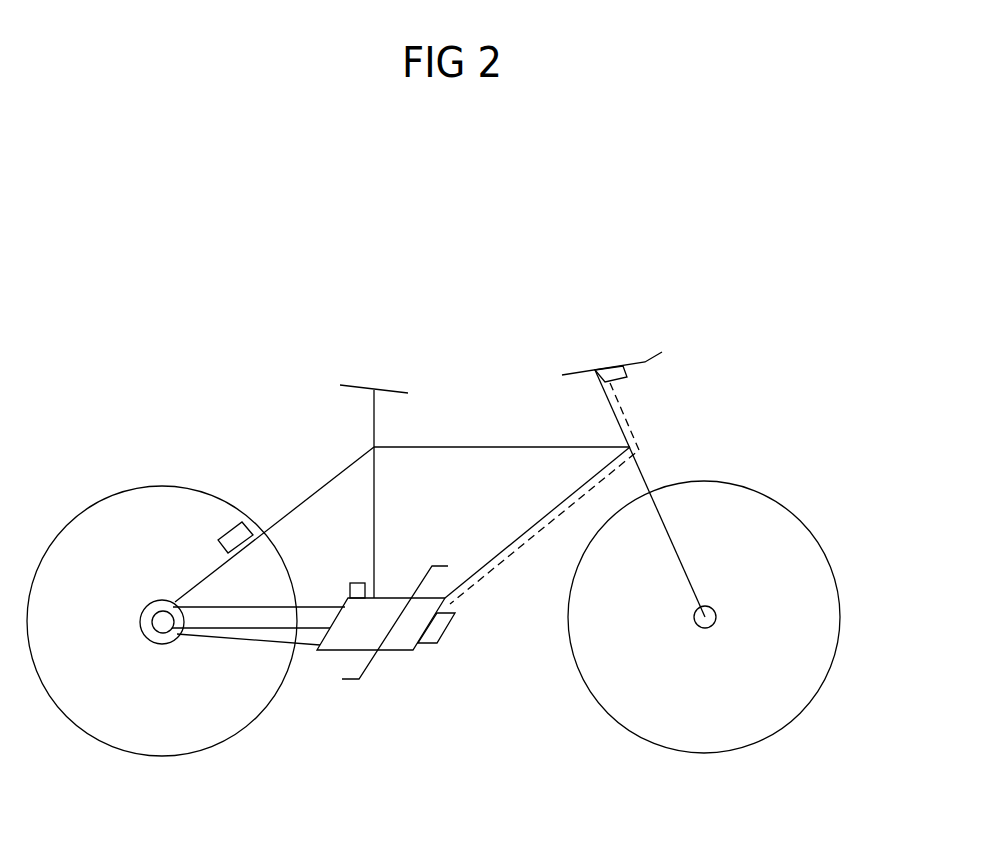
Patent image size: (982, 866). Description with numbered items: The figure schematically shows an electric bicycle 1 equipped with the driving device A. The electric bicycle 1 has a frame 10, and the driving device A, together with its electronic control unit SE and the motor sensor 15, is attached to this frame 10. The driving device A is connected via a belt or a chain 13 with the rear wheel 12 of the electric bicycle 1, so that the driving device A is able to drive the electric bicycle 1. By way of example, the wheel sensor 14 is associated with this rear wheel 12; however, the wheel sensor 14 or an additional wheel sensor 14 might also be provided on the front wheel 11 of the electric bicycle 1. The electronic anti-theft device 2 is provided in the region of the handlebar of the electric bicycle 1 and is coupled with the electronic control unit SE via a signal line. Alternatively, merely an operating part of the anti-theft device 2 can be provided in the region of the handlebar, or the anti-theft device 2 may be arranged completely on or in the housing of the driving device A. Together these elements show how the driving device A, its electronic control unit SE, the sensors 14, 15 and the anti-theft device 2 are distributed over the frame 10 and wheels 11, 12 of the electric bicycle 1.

The electric bicycle 1 is at (296, 322).
The electronic anti-theft device 2 is at (627, 377).
The frame 10 is at (498, 447).
The front wheel 11 is at (787, 723).
The rear wheel 12 is at (95, 742).
The chain 13 is at (286, 606).
The wheel sensor 14 is at (227, 525).
The motor sensor 15 is at (360, 588).
The driving device A is at (398, 653).
The electronic control unit SE is at (445, 652).